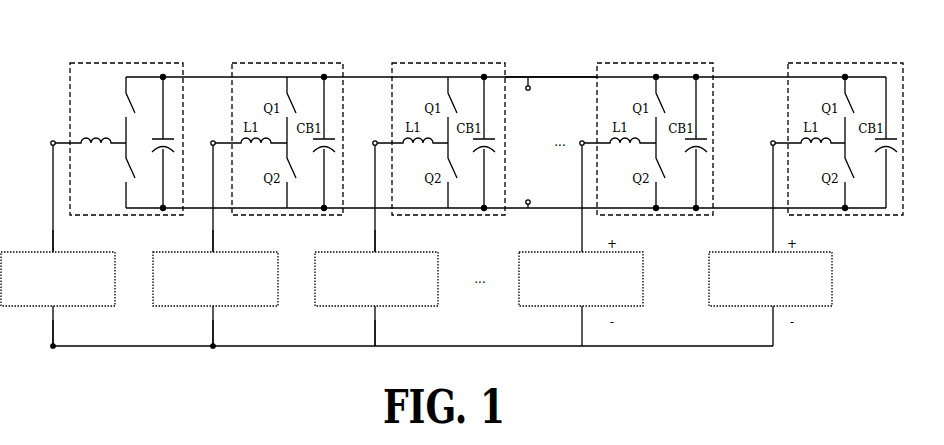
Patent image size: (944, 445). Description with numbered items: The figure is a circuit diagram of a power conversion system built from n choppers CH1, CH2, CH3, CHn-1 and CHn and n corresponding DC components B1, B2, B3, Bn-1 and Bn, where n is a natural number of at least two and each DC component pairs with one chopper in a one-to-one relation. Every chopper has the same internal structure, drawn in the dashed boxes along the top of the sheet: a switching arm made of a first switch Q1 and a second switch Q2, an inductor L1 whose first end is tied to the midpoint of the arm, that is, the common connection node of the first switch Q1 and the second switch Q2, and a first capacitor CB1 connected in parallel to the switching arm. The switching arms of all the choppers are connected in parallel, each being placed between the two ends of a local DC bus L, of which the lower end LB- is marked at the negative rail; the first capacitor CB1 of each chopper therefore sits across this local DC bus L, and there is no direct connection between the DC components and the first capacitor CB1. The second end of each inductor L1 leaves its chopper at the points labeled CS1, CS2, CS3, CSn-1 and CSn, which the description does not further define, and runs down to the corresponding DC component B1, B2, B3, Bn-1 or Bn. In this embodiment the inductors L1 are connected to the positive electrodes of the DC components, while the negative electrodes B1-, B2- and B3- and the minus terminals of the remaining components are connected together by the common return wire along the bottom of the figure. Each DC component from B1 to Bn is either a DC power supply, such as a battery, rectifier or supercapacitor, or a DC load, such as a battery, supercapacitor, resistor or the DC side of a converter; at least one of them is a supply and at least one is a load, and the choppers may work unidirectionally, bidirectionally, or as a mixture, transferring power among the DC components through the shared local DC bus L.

The chopper CH1 is at (126, 115).
The chopper CH2 is at (287, 115).
The chopper CH3 is at (448, 115).
The chopper CHn-1 is at (655, 115).
The chopper CHn is at (845, 115).
The first current sensor / input node CS1 is at (43, 186).
The second current sensor / input node CS2 is at (204, 186).
The third current sensor / input node CS3 is at (366, 186).
The (n-1)th current sensor / input node CSn-1 is at (567, 187).
The nth current sensor / input node CSn is at (761, 186).
The inductor L1 is at (90, 132).
The first switch Q1 is at (118, 110).
The second switch Q2 is at (118, 175).
The first capacitor CB1 is at (154, 143).
The local DC bus L is at (551, 68).
The end of local DC bus LB- is at (540, 202).
The DC component B1 is at (69, 299).
The DC component B2 is at (226, 299).
The DC component B3 is at (389, 299).
The DC component Bn-1 is at (598, 299).
The DC component Bn is at (783, 299).
The negative electrode B1- is at (71, 331).
The negative electrode B2- is at (231, 331).
The negative electrode B3- is at (393, 331).